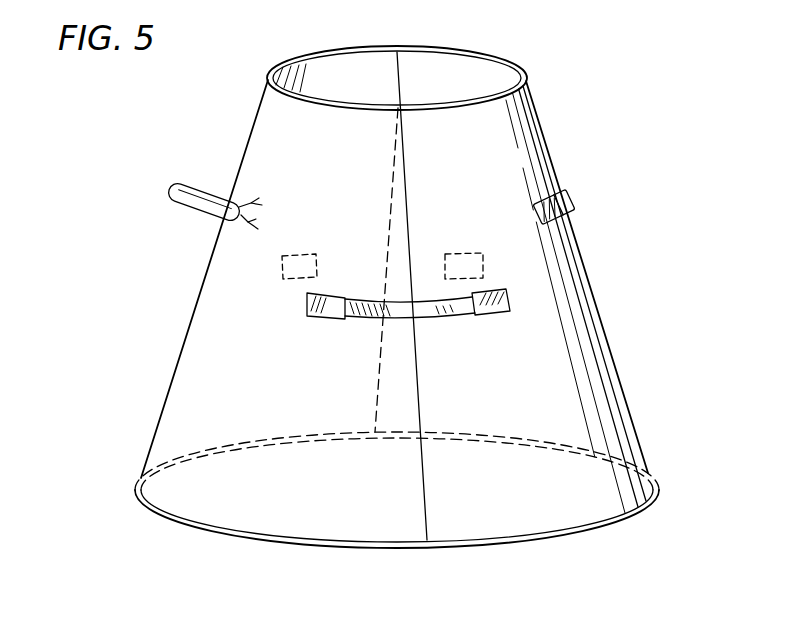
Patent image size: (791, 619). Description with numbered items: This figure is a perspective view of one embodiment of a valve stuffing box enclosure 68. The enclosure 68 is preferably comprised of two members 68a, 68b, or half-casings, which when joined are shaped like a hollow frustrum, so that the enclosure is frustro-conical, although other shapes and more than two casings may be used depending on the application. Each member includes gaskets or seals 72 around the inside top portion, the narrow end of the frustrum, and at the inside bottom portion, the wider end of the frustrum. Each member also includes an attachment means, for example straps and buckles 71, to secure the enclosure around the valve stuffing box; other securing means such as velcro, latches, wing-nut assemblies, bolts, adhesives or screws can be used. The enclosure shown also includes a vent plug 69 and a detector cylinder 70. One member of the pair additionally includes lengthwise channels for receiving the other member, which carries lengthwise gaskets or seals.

The valve stuffing box enclosure 68 is at (572, 106).
The member 68a is at (568, 378).
The member 68b is at (202, 381).
The vent plug 69 is at (572, 201).
The detector cylinder 70 is at (186, 197).
The straps and buckles 71 is at (473, 318).
The gaskets or seals 72 is at (313, 98).